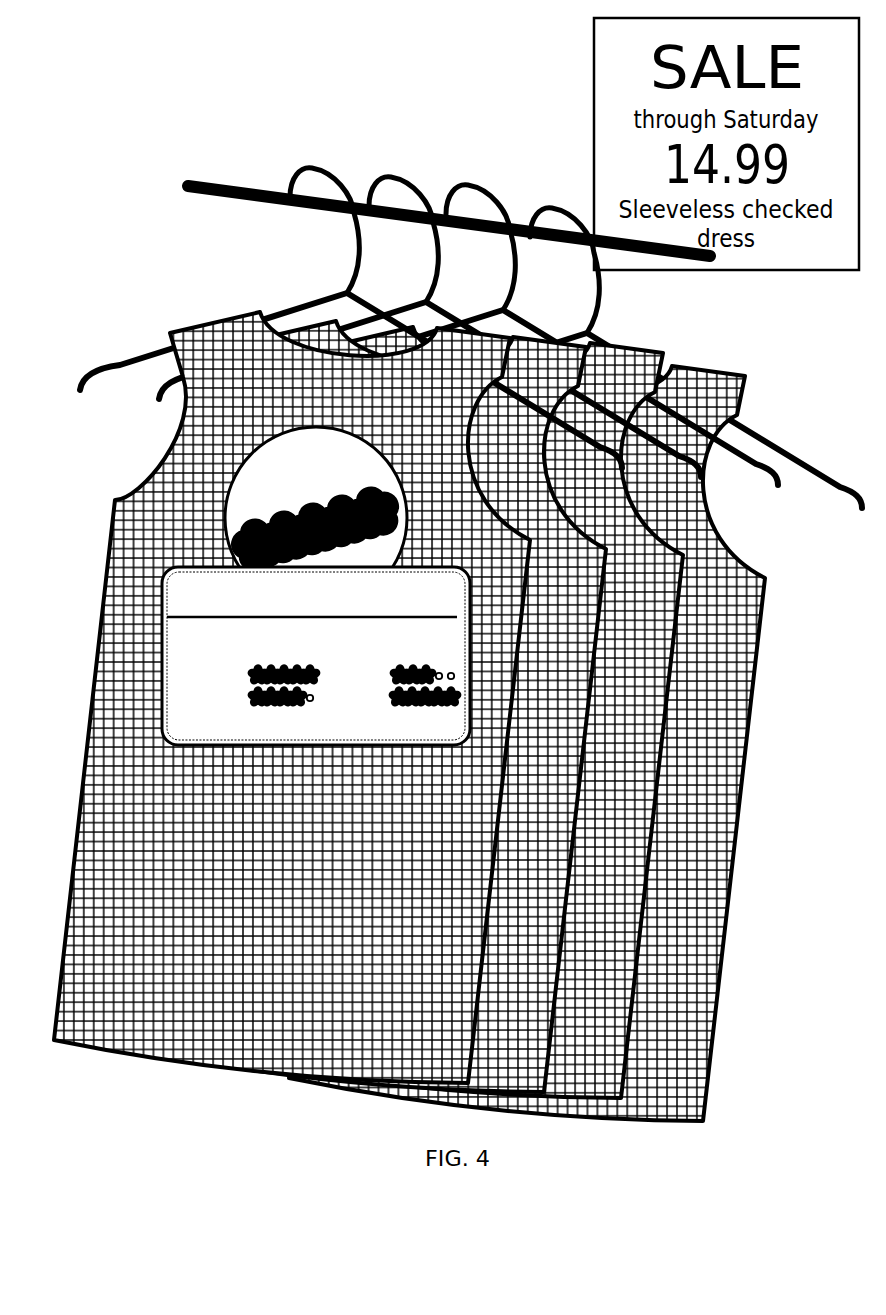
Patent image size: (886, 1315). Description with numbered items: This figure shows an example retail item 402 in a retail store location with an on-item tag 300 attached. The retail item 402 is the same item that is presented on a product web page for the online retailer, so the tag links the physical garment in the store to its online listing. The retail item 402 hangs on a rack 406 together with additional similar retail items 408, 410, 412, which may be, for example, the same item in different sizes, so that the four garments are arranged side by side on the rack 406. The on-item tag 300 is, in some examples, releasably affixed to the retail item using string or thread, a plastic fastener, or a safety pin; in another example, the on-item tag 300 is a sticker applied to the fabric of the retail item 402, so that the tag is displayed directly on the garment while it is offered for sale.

The on-item tag 300 is at (235, 487).
The retail item 402 is at (128, 1056).
The rack 406 is at (557, 232).
The additional similar retail item 408 is at (462, 1092).
The additional similar retail item 410 is at (598, 1095).
The additional similar retail item 412 is at (693, 1115).